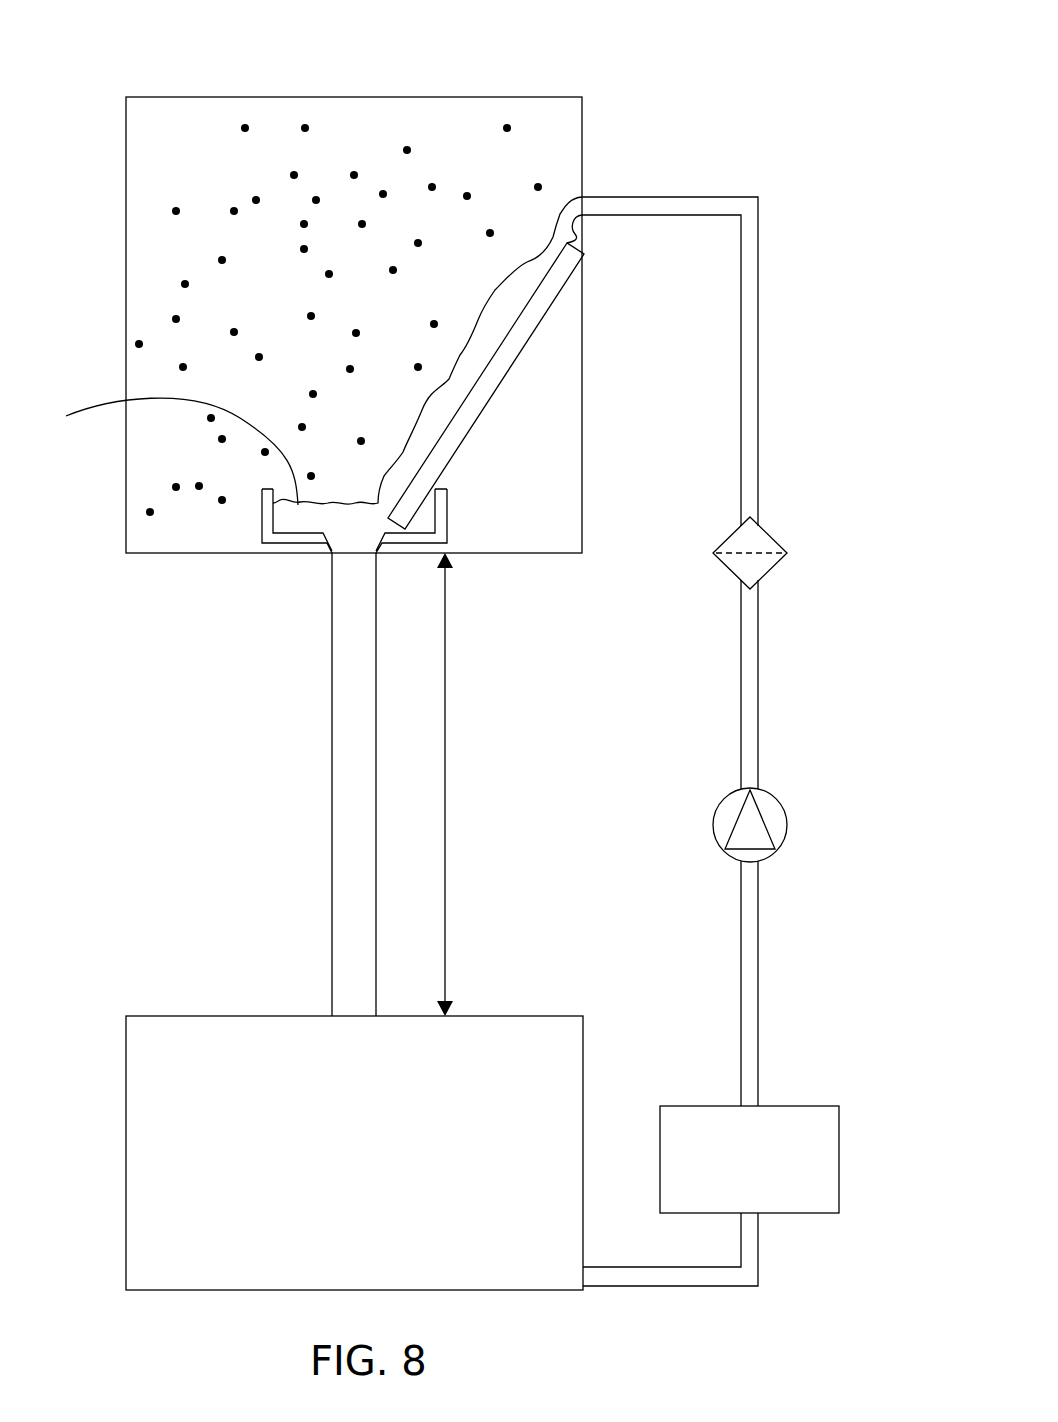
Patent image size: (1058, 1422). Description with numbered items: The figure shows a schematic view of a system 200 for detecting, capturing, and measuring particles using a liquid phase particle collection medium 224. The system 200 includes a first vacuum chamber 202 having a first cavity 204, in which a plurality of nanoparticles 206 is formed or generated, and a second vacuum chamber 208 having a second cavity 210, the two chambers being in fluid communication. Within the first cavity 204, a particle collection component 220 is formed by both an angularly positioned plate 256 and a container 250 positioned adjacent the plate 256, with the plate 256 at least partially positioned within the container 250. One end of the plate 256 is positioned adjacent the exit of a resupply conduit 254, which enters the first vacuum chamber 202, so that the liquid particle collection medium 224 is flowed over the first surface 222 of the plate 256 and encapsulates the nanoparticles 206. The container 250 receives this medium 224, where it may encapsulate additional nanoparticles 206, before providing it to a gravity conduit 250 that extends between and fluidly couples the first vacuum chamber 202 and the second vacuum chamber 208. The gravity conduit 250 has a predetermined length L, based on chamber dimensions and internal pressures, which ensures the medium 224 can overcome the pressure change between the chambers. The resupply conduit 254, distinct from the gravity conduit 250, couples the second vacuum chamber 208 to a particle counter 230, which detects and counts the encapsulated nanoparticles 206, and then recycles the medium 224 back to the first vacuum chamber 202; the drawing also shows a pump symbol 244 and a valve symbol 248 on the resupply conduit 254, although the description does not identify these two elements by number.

The system 200 is at (289, 60).
The first vacuum chamber 202 is at (583, 127).
The first cavity 204 is at (215, 159).
The nanoparticles 206 is at (148, 512).
The second vacuum chamber 208 is at (126, 1081).
The second cavity 210 is at (385, 1165).
The particle collection component 220 is at (473, 606).
The first surface 222 is at (526, 275).
The particle collection medium 224 is at (162, 451).
The particle counter 230 is at (840, 1128).
The pump 244 is at (787, 812).
The valve 248 is at (787, 553).
The gravity conduit 250 is at (273, 547).
The resupply conduit 254 is at (759, 1266).
The plate 256 is at (522, 335).
The predetermined length L is at (445, 795).